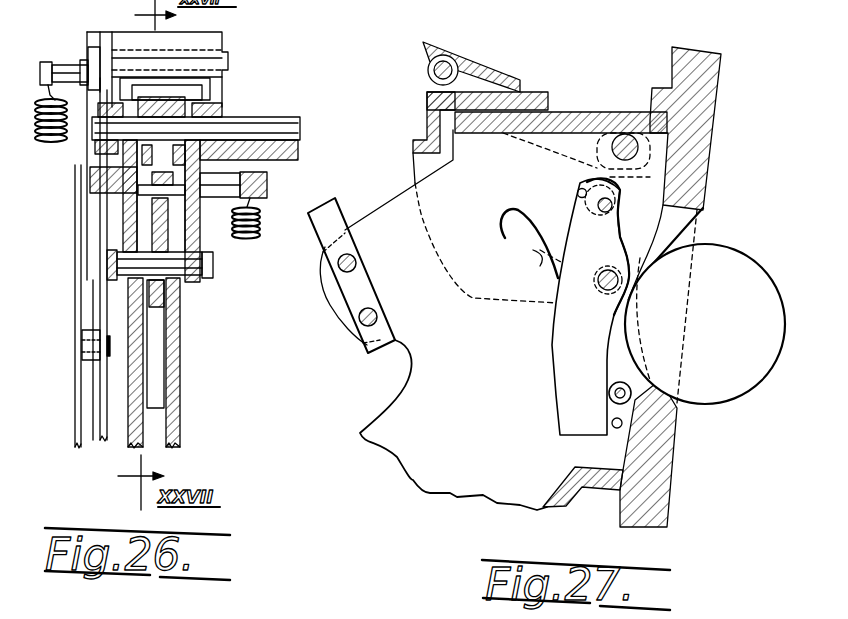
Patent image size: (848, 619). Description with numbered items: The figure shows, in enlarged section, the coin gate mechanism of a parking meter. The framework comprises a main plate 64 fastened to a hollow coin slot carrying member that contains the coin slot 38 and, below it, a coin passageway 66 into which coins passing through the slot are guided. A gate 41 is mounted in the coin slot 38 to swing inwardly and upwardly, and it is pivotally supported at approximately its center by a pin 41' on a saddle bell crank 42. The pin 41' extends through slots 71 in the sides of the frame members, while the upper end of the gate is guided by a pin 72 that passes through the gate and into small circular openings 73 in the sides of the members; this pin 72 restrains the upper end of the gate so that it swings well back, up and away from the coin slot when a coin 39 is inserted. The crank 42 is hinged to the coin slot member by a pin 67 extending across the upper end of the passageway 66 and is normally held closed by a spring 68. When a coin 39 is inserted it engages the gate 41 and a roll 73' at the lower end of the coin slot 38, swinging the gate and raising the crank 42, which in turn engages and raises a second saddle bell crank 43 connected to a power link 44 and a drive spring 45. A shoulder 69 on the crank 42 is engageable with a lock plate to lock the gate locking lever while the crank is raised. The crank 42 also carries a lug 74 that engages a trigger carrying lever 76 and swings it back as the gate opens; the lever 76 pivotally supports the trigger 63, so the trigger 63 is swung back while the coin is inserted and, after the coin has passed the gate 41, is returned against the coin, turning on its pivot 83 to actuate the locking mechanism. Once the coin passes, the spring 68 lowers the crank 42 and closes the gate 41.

In FIG. 27, the coin slot 38 is at (663, 240).
In FIG. 27, the coin 39 is at (717, 398).
In FIG. 26, the gate 41 is at (185, 344).
In FIG. 27, the gate 41 is at (565, 306).
In FIG. 26, the pin 41' is at (188, 273).
In FIG. 27, the pin 41' is at (595, 304).
In FIG. 26, the saddle bell crank 42 is at (197, 90).
In FIG. 27, the saddle bell crank 42 is at (540, 92).
In FIG. 26, the second saddle bell crank 43 is at (216, 42).
In FIG. 27, the second saddle bell crank 43 is at (473, 58).
In FIG. 26, the power link 44 is at (86, 200).
In FIG. 26, the drive spring 45 is at (34, 132).
In FIG. 26, the trigger 63 is at (100, 387).
In FIG. 26, the main plate 64 is at (132, 427).
In FIG. 27, the main plate 64 is at (465, 485).
In FIG. 26, the coin passageway 66 is at (155, 437).
In FIG. 26, the pin 67 is at (300, 130).
In FIG. 27, the pin 67 is at (623, 133).
In FIG. 26, the spring 68 is at (255, 240).
In FIG. 27, the shoulder 69 is at (415, 148).
In FIG. 26, the slots 71 is at (180, 297).
In FIG. 27, the slots 71 is at (533, 260).
In FIG. 26, the pin 72 is at (137, 188).
In FIG. 27, the pin 72 is at (602, 213).
In FIG. 26, the small circular openings 73 is at (83, 207).
In FIG. 27, the small circular openings 73 is at (558, 227).
In FIG. 27, the roll 73' is at (577, 409).
In FIG. 26, the lug 74 is at (100, 168).
In FIG. 26, the trigger carrying lever 76 is at (95, 290).
In FIG. 26, the pivot 83 is at (83, 345).